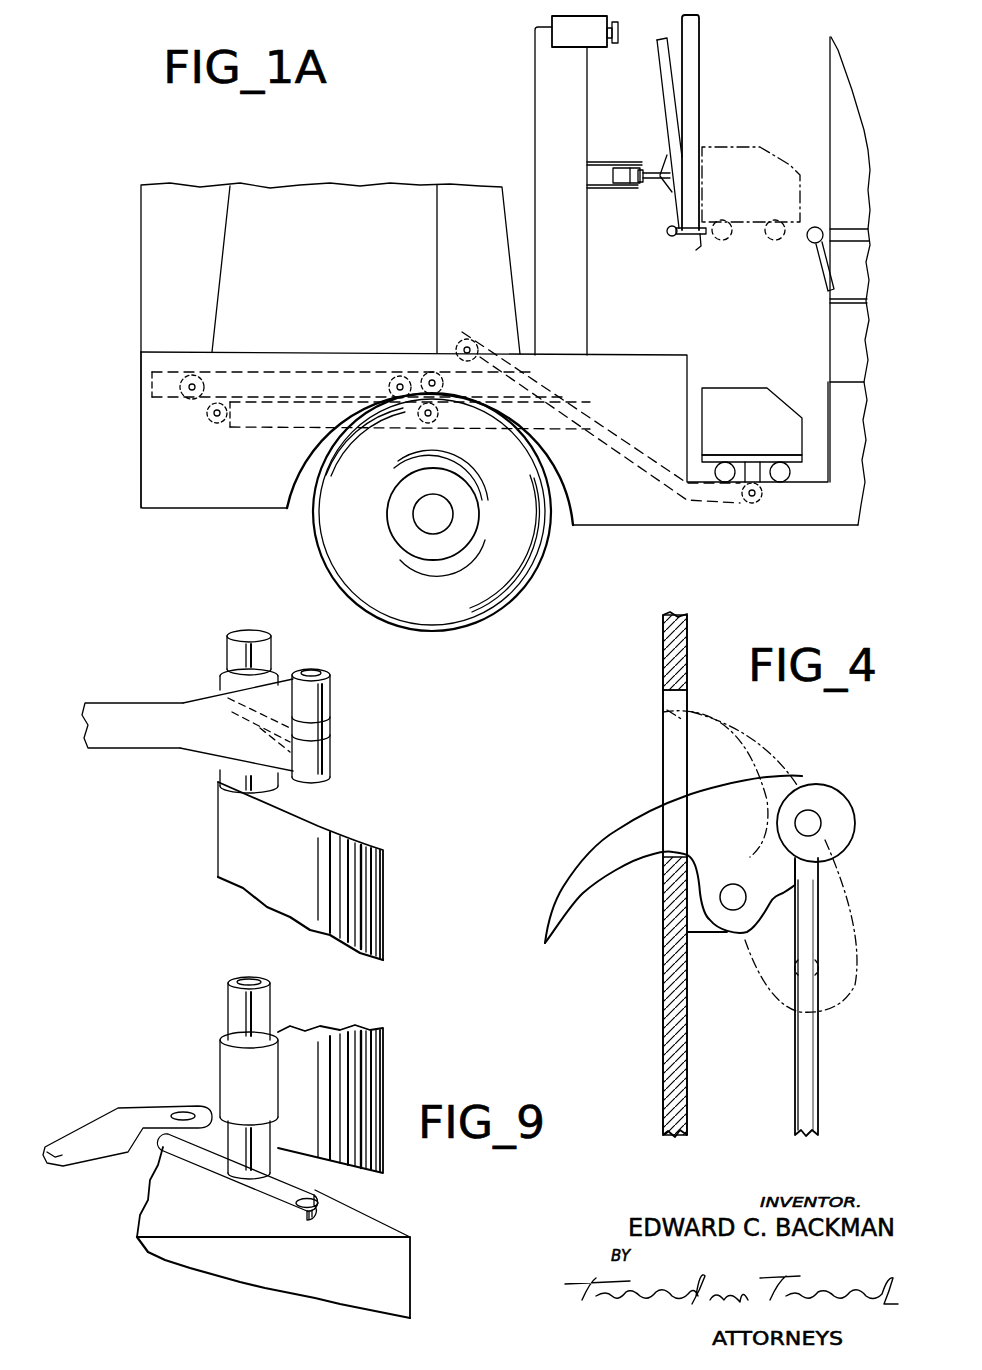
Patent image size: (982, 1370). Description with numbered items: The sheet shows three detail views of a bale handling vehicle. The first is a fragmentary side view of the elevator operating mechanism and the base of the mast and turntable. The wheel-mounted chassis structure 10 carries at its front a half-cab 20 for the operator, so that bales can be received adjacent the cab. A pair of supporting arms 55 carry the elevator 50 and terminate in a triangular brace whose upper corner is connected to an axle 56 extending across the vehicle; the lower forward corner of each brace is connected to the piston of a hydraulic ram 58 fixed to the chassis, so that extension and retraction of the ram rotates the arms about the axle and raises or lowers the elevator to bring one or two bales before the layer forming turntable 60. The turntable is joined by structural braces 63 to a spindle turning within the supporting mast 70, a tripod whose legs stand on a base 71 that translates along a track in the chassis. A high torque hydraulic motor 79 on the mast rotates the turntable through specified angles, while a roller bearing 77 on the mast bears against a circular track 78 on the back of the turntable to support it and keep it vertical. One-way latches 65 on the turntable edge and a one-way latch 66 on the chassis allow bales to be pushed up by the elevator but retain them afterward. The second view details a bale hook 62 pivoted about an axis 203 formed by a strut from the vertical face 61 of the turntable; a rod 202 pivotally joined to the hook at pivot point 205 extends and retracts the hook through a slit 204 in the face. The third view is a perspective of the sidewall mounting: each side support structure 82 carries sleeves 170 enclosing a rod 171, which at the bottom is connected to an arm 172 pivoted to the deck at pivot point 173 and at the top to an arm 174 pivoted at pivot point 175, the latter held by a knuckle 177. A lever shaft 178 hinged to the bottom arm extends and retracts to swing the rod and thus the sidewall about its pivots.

In FIG. 1A, the chassis structure 10 is at (186, 511).
In FIG. 1A, the half-cab 20 is at (141, 240).
In FIG. 1A, the elevator 50 is at (757, 455).
In FIG. 1A, the supporting arms 55 is at (577, 434).
In FIG. 1A, the axle 56 is at (440, 385).
In FIG. 1A, the hydraulic ram 58 is at (272, 428).
In FIG. 1A, the layer forming turntable 60 is at (699, 78).
In FIG. 4, the vertical face 61 is at (662, 1060).
In FIG. 4, the bale hook 62 is at (562, 908).
In FIG. 1A, the structural braces 63 is at (660, 68).
In FIG. 1A, the one-way latches 65 is at (695, 238).
In FIG. 1A, the one-way latch 66 is at (818, 252).
In FIG. 1A, the supporting mast 70 is at (535, 122).
In FIG. 1A, the base 71 is at (300, 372).
In FIG. 1A, the roller bearing 77 is at (638, 168).
In FIG. 1A, the circular track 78 is at (654, 184).
In FIG. 1A, the hydraulic motor 79 is at (575, 48).
In FIG. 9, the side support structure 82 is at (385, 899).
In FIG. 9, the sleeves 170 is at (220, 777).
In FIG. 9, the rod 171 is at (228, 1012).
In FIG. 9, the arm 172 is at (246, 1192).
In FIG. 9, the pivot point 173 is at (320, 1202).
In FIG. 9, the arm 174 is at (222, 678).
In FIG. 9, the pivot point 175 is at (322, 672).
In FIG. 9, the knuckle 177 is at (200, 700).
In FIG. 9, the lever shaft 178 is at (82, 1137).
In FIG. 4, the rod 202 is at (820, 1062).
In FIG. 4, the pivotal axis 203 is at (738, 910).
In FIG. 4, the slit 204 is at (663, 760).
In FIG. 4, the pivot point 205 is at (818, 822).